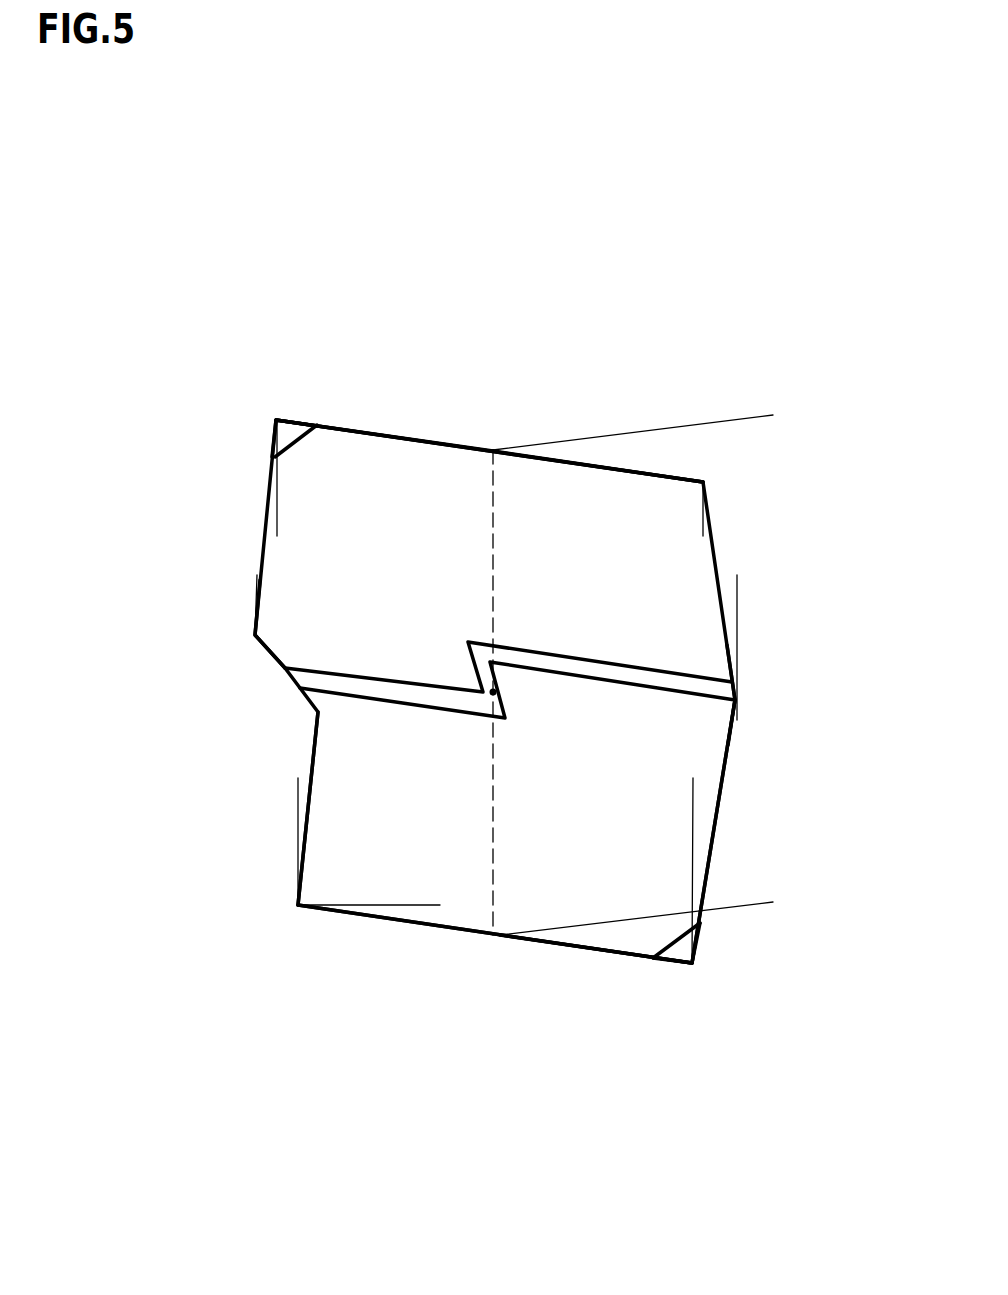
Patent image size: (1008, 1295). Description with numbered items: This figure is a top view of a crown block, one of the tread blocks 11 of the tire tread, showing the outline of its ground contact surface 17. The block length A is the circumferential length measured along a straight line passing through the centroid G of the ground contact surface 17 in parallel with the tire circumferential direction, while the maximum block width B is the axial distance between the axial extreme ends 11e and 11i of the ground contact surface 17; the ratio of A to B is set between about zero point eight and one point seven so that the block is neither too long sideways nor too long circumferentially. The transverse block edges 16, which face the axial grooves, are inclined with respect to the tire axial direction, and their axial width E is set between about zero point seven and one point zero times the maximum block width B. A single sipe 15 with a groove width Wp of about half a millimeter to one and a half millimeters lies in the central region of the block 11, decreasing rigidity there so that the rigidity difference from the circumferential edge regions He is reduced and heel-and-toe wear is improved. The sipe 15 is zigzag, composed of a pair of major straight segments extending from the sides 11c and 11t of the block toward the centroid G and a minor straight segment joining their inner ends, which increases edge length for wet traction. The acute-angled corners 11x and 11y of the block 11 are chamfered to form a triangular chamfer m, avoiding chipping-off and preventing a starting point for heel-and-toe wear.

The tread block 11 is at (717, 400).
The acute-angled corner 11y is at (275, 420).
The axial extreme end 11i is at (255, 637).
The side of the block 11c is at (308, 817).
The axial extreme end 11e is at (737, 713).
The side of the block 11t is at (720, 818).
The acute-angled corner 11x is at (692, 963).
The sipe 15 is at (320, 687).
The transverse block edge 16 is at (403, 435).
The ground contact surface 17 is at (577, 500).
The triangular chamfer m is at (295, 433).
The circumferential edge region He is at (463, 482).
The centroid G is at (493, 692).
The axial width of the transverse block edge E is at (278, 528).
The maximum block width B is at (257, 583).
The block length A is at (768, 415).
The groove width of the sipe Wp is at (638, 633).